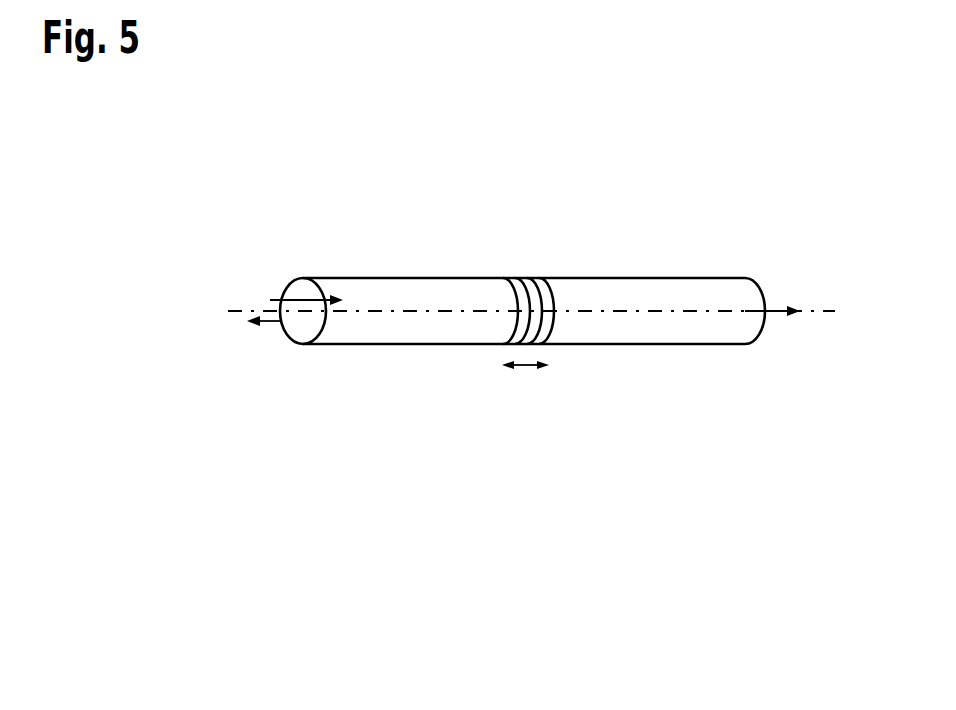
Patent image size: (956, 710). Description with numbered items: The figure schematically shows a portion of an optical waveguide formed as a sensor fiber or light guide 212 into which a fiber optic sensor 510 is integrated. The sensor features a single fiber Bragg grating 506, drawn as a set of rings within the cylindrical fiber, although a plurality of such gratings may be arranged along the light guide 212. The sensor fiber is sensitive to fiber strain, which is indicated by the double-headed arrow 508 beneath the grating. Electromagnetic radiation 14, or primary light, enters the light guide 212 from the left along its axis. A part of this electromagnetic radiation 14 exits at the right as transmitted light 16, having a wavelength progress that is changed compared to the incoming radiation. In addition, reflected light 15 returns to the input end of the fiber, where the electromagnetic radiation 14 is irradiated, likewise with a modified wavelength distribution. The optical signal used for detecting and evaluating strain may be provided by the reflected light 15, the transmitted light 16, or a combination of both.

The fiber optic sensor 510 is at (183, 152).
The light guide 212 is at (653, 302).
The fiber Bragg grating 506 is at (521, 259).
The fiber strain 508 is at (524, 368).
The electromagnetic radiation 14 is at (270, 300).
The reflected light 15 is at (272, 325).
The transmitted light 16 is at (783, 309).